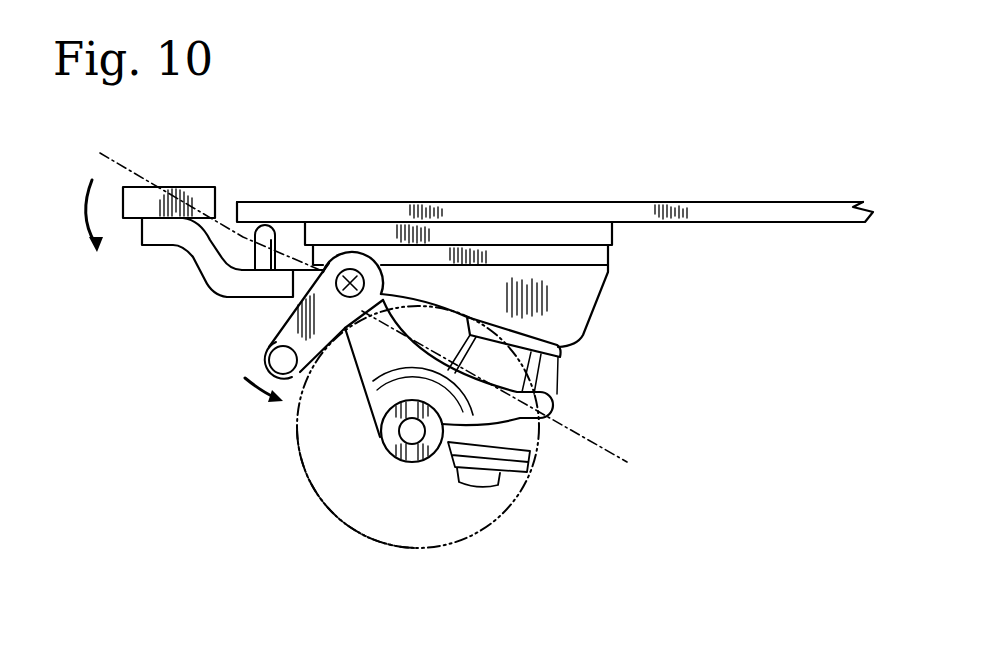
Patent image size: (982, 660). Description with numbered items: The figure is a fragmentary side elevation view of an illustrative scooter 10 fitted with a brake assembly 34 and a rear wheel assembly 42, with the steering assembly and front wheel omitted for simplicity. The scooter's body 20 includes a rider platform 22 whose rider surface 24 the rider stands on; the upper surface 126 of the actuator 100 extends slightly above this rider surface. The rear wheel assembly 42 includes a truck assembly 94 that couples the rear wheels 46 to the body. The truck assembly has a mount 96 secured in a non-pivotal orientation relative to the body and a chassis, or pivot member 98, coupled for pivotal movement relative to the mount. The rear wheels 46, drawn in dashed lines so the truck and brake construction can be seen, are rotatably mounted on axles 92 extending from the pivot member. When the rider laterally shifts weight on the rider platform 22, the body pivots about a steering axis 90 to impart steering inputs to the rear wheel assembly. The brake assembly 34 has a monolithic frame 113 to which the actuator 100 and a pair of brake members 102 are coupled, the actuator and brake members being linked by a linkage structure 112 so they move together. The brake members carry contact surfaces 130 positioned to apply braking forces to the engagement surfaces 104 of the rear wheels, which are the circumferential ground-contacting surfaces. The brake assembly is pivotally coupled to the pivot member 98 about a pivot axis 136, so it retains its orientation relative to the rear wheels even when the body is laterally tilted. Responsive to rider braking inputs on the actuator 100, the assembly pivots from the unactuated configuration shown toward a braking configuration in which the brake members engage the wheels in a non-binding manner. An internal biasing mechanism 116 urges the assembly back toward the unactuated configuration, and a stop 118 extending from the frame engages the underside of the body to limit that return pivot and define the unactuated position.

The scooter 10 is at (770, 102).
The body 20 is at (555, 179).
The rider platform 22 is at (561, 199).
The rider surface 24 is at (620, 202).
The brake assembly 34 is at (168, 308).
The rear wheel assembly 42 is at (352, 566).
The rear wheels 46 is at (326, 509).
The steering axis 90 is at (494, 402).
The axles 92 is at (407, 433).
The truck assembly 94 is at (672, 317).
The mount 96 is at (613, 231).
The pivot member 98 is at (566, 409).
The actuator 100 is at (174, 184).
The brake members 102 is at (267, 353).
The engagement surfaces 104 is at (297, 450).
The linkage structure 112 is at (273, 292).
The brake assembly frame 113 is at (135, 261).
The biasing mechanism 116 is at (387, 227).
The stop 118 is at (278, 245).
The upper surface 126 is at (200, 186).
The contact surfaces 130 is at (300, 367).
The pivot axis 136 is at (358, 296).